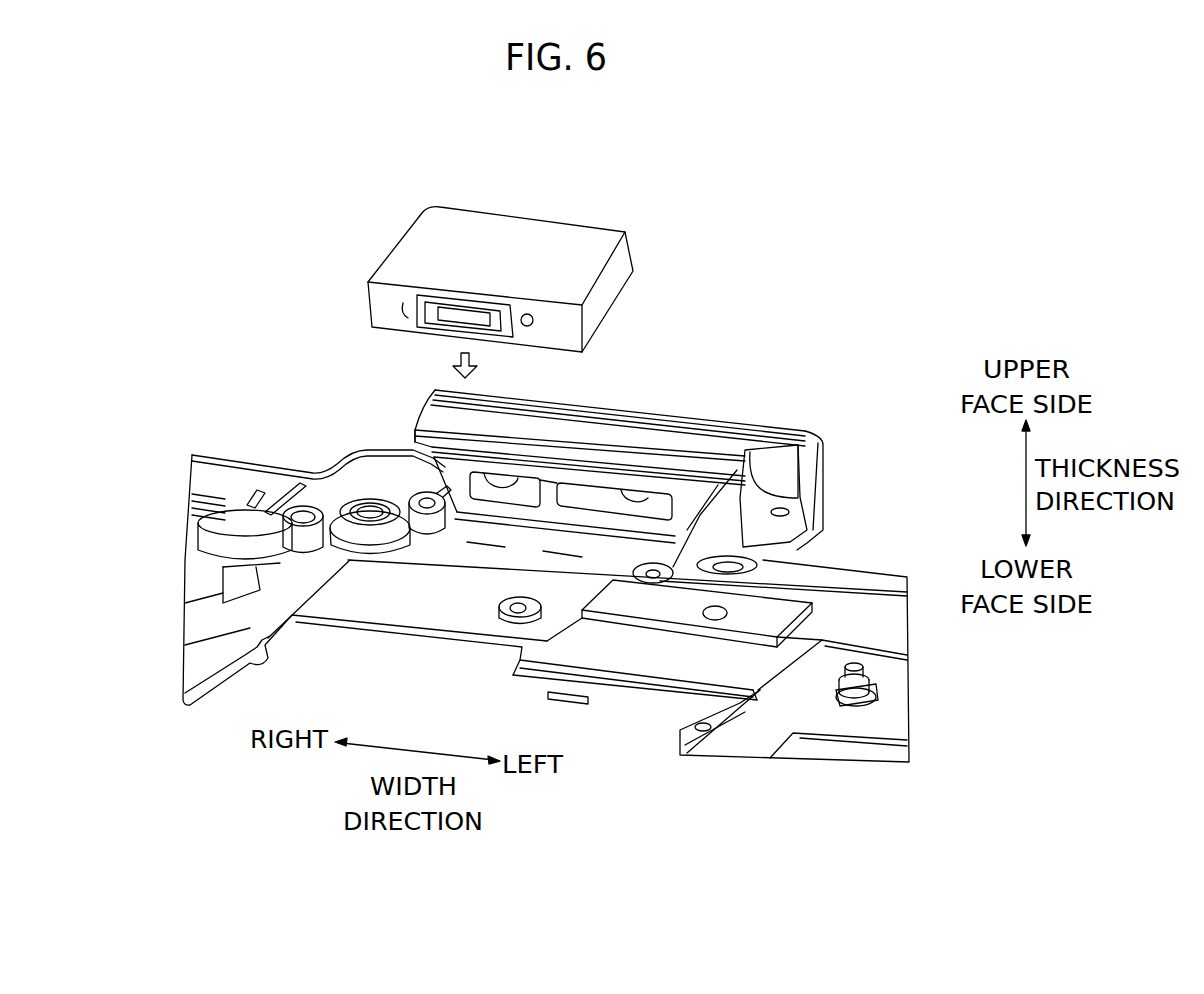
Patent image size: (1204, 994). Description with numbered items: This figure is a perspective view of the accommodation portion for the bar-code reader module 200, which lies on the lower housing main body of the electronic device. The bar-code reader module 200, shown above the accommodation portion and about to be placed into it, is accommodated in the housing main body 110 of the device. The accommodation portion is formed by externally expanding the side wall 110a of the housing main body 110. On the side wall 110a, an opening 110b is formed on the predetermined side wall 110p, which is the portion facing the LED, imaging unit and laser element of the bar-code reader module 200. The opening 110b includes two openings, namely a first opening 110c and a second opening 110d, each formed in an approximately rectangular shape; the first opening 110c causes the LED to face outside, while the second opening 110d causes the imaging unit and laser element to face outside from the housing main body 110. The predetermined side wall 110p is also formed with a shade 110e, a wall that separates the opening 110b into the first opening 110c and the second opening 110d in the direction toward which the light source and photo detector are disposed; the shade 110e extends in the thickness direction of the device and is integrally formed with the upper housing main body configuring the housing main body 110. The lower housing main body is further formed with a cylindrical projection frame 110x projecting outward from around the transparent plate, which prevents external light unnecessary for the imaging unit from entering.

The bar-code reader module 200 is at (567, 183).
The housing main body 110 is at (551, 525).
The side wall 110a is at (240, 461).
The opening 110b is at (630, 435).
The first opening 110c is at (487, 474).
The second opening 110d is at (622, 490).
The shade 110e is at (550, 482).
The predetermined side wall 110p is at (432, 460).
The projection frame 110x is at (690, 440).